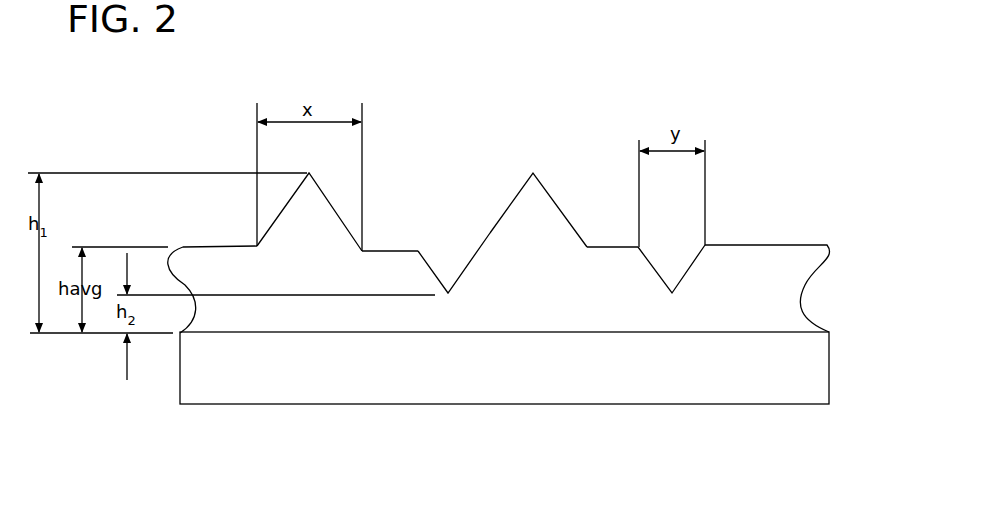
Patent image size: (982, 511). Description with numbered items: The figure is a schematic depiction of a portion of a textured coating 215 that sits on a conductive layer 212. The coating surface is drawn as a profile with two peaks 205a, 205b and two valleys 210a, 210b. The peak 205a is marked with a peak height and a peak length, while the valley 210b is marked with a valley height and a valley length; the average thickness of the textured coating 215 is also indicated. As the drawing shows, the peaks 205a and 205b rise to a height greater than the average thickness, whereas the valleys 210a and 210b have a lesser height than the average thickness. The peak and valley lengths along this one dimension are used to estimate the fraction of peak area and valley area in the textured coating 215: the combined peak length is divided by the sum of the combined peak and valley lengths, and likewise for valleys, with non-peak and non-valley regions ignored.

The peak 205a is at (293, 190).
The peak 205b is at (520, 180).
The valley 210a is at (435, 272).
The valley 210b is at (692, 255).
The conductive layer 212 is at (478, 380).
The textured coating 215 is at (613, 308).